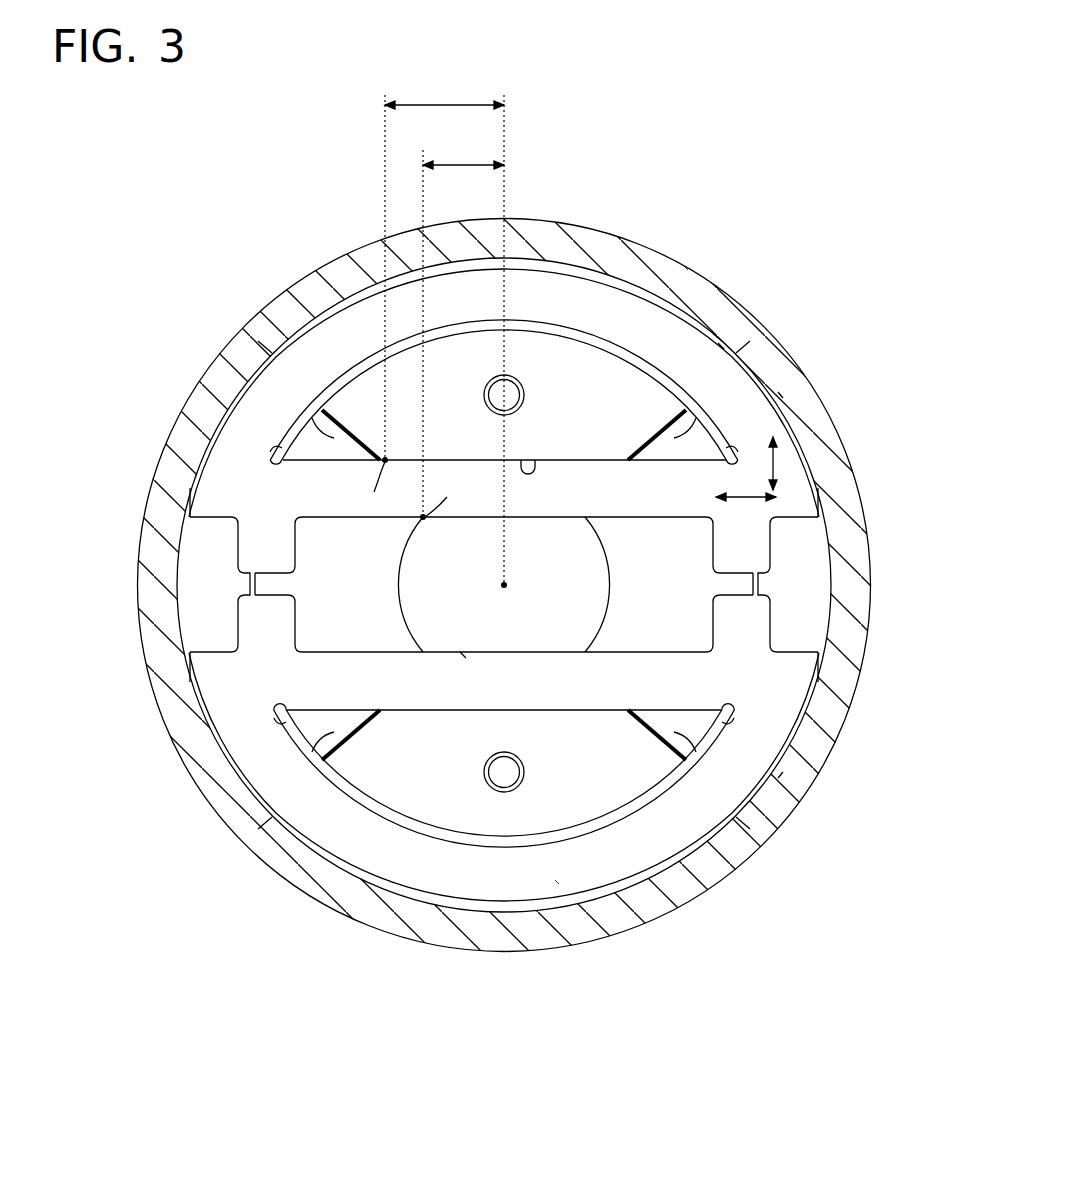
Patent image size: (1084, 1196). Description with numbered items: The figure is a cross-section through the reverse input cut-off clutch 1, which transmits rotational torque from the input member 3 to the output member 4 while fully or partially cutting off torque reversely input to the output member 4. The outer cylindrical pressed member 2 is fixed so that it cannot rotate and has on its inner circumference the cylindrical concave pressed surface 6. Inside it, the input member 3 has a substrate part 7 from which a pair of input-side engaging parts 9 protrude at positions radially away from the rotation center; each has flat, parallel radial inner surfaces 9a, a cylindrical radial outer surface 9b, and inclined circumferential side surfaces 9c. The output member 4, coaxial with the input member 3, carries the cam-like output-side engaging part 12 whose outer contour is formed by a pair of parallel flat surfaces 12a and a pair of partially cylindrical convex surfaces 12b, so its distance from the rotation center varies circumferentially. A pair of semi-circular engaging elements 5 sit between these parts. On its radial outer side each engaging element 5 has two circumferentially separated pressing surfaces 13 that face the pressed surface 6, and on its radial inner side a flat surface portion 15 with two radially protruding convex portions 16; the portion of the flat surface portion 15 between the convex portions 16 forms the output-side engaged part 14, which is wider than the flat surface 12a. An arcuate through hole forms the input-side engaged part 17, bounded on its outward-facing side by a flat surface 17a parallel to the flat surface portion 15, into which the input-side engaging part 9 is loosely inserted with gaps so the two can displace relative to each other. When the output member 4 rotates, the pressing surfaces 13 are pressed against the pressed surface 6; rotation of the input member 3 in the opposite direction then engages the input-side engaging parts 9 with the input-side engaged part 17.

The reverse input cut-off clutch 1 is at (728, 190).
The pressed member 2 is at (727, 298).
The input member 3 is at (782, 790).
The output member 4 is at (598, 601).
The engaging elements 5 is at (686, 268).
The pressed surface 6 is at (549, 463).
The substrate part 7 is at (816, 768).
The input-side engaging parts 9 is at (556, 356).
The radial inner surfaces 9a is at (657, 322).
The radial outer surface 9b is at (532, 328).
The circumferential side surfaces 9c is at (313, 408).
The output-side engaging part 12 is at (426, 581).
The flat surfaces 12a is at (722, 345).
The convex surfaces 12b is at (250, 585).
The pressing surfaces 13 is at (253, 357).
The output-side engaged part 14 is at (250, 690).
The flat surface portion 15 is at (784, 394).
The convex portions 16 is at (246, 545).
The input-side engaged part 17 is at (353, 368).
The flat surface 17a is at (318, 428).